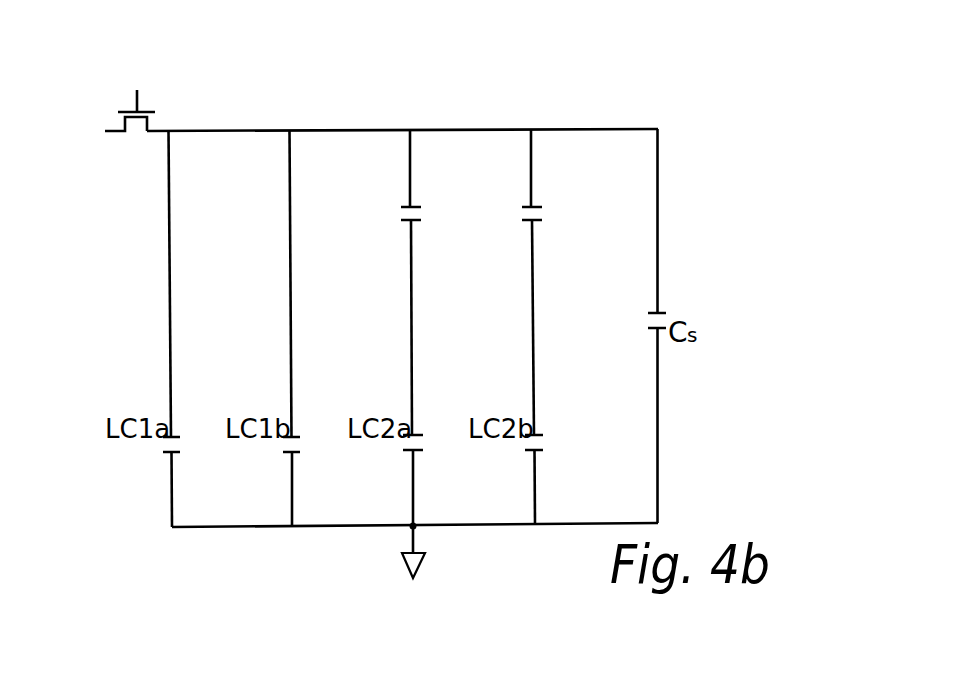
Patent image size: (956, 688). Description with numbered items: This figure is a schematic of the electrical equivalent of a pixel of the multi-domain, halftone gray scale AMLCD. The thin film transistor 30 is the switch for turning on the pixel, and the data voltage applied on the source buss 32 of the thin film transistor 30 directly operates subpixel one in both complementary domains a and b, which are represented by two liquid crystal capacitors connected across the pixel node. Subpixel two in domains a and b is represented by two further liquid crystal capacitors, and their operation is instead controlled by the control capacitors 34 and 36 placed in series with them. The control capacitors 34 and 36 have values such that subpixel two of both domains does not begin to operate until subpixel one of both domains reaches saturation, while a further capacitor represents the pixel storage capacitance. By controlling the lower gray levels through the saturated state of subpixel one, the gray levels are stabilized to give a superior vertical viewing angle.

The thin film transistor 30 is at (150, 119).
The source buss 32 is at (119, 120).
The control capacitor 34 is at (410, 206).
The control capacitor 36 is at (532, 206).